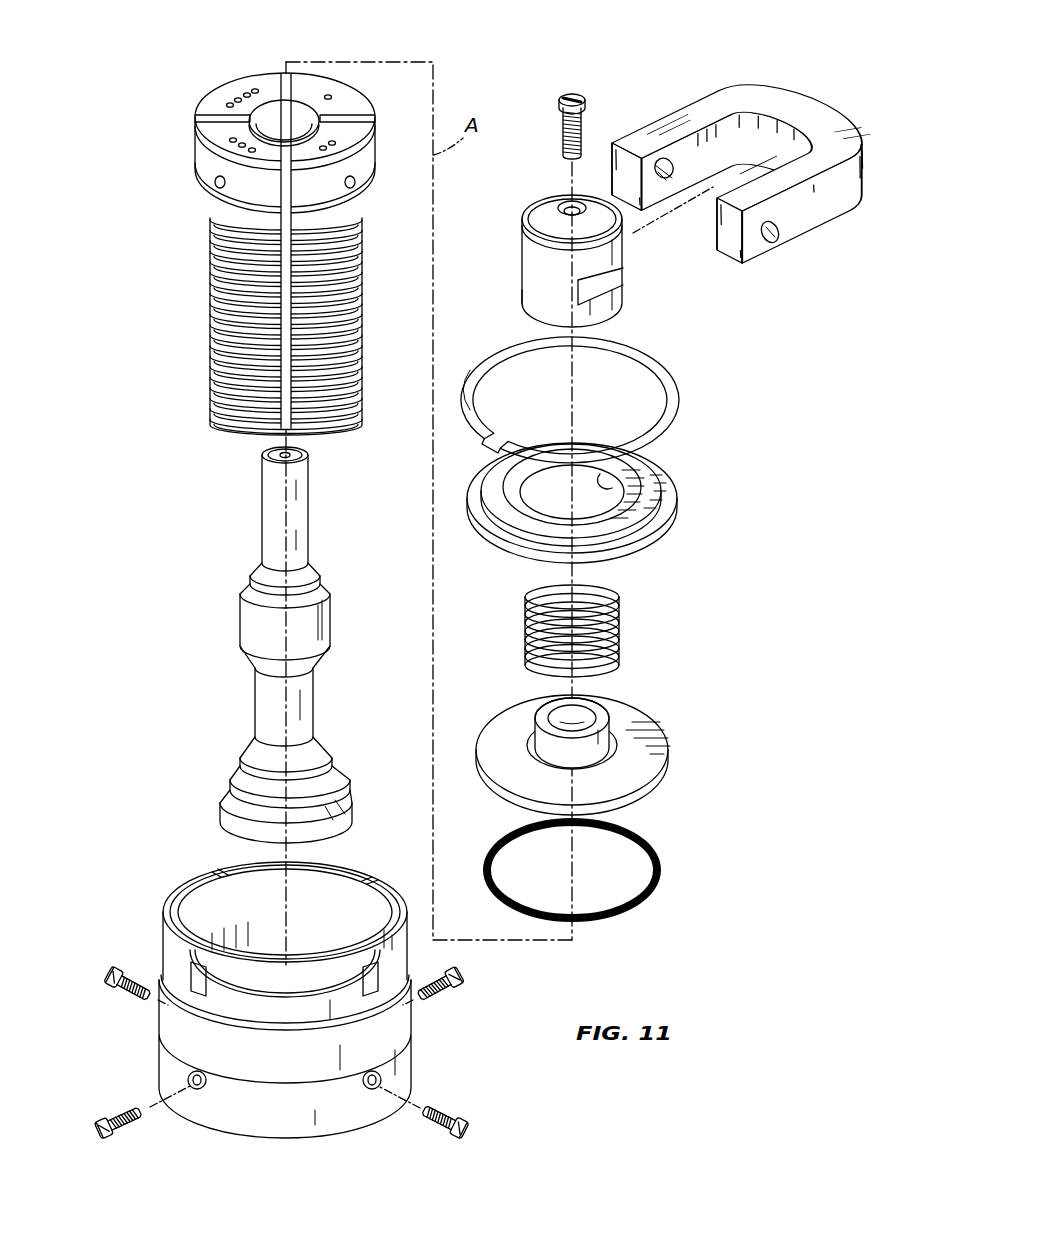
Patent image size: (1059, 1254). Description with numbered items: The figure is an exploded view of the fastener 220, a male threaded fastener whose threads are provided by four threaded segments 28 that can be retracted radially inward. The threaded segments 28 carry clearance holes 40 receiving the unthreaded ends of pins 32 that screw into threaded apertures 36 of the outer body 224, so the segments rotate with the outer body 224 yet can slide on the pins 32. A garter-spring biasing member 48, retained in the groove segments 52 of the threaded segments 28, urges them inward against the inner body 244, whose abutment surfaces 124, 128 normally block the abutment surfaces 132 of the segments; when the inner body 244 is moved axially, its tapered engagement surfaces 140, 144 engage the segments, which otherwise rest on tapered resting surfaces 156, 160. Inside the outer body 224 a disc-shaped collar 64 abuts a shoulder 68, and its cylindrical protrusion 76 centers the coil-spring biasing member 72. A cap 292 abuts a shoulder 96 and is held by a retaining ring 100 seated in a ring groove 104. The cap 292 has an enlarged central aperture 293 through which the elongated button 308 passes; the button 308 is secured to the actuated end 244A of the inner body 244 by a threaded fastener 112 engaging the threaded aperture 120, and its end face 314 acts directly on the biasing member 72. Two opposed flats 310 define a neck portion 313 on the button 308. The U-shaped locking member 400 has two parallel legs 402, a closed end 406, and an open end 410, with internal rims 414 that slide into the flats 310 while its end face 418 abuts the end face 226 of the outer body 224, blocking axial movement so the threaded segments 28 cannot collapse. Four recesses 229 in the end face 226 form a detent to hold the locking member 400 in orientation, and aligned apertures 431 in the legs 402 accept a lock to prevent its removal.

The fastener 220 is at (265, 229).
The threaded segments 28 is at (212, 105).
The abutment surface 132 is at (265, 96).
The groove segment 52 is at (197, 181).
The clearance holes 40 is at (220, 190).
The inner body 244 is at (275, 635).
The actuated end 244A is at (303, 490).
The threaded aperture 120 is at (272, 455).
The tapered engagement surface 140 is at (262, 568).
The tapered resting surface 156 is at (248, 592).
The abutment surface 124 is at (272, 595).
The tapered engagement surface 144 is at (240, 764).
The tapered resting surface 160 is at (228, 793).
The abutment surface 128 is at (333, 802).
The outer body 224 is at (285, 984).
The end face 226 is at (225, 868).
The shoulder 96 is at (240, 880).
The recesses 229 is at (205, 880).
The ring groove 104 is at (372, 890).
The shoulder 68 is at (242, 952).
The pins 32 is at (133, 995).
The threaded apertures 36 is at (196, 1090).
The threaded fastener 112 is at (556, 90).
The button 308 is at (577, 233).
The flats 310 is at (618, 278).
The neck portion 313 is at (578, 290).
The end face 314 is at (530, 320).
The locking member 400 is at (751, 166).
The legs 402 is at (741, 171).
The internal rims 414 is at (732, 176).
The closed end 406 is at (751, 140).
The apertures 431 is at (663, 158).
The open end 410 is at (688, 222).
The end face 418 is at (843, 215).
The retaining ring 100 is at (688, 401).
The cap 292 is at (620, 503).
The central aperture 293 is at (615, 484).
The biasing member 72 is at (633, 638).
The collar 64 is at (600, 739).
The protrusion 76 is at (595, 755).
The biasing member 48 is at (665, 857).